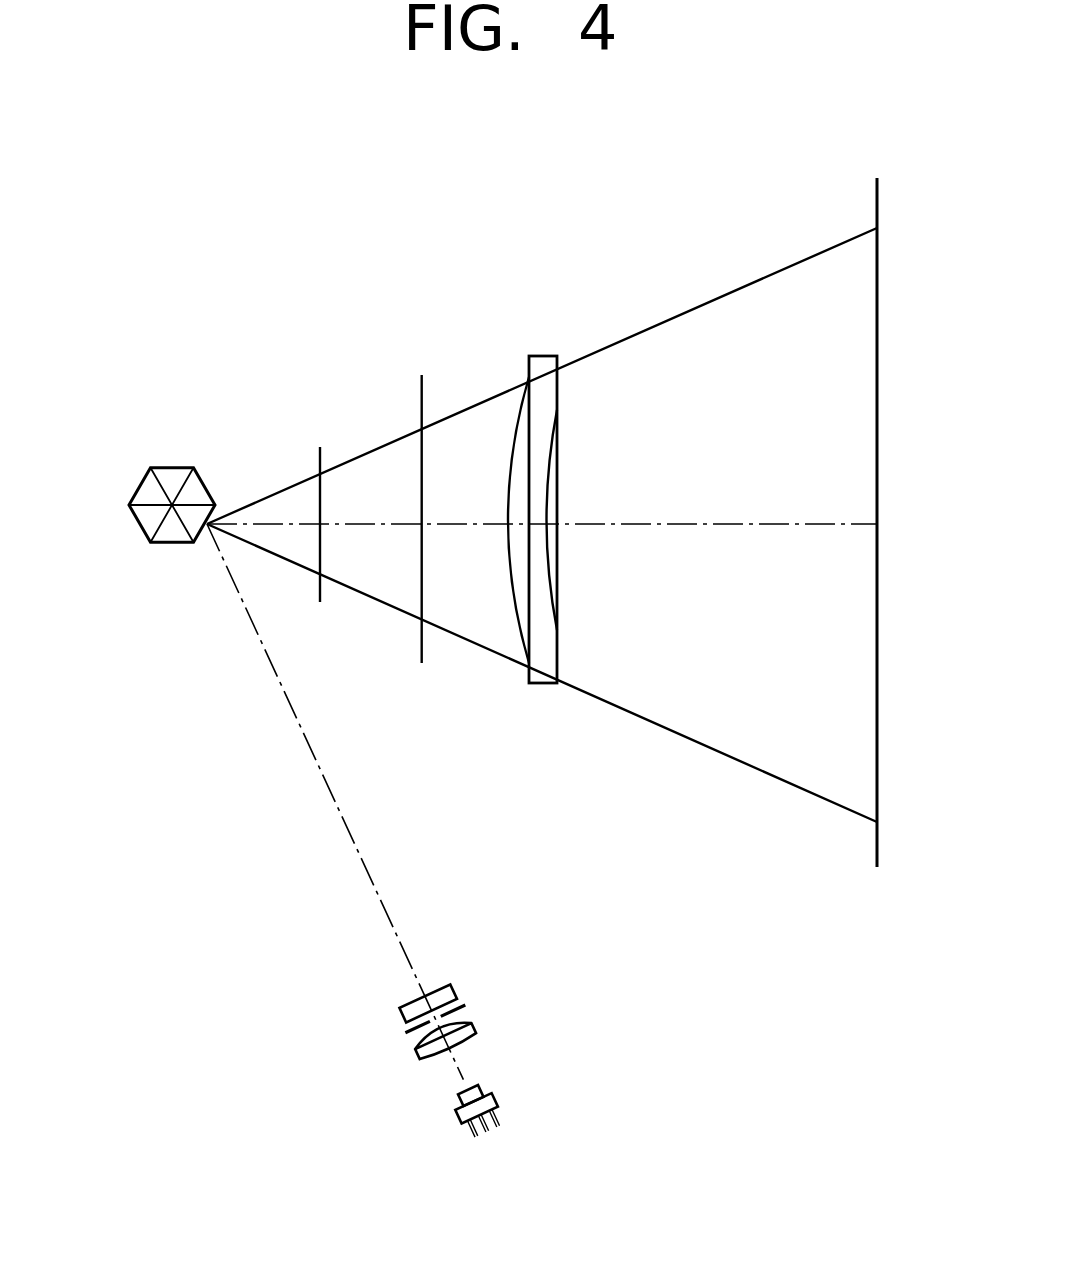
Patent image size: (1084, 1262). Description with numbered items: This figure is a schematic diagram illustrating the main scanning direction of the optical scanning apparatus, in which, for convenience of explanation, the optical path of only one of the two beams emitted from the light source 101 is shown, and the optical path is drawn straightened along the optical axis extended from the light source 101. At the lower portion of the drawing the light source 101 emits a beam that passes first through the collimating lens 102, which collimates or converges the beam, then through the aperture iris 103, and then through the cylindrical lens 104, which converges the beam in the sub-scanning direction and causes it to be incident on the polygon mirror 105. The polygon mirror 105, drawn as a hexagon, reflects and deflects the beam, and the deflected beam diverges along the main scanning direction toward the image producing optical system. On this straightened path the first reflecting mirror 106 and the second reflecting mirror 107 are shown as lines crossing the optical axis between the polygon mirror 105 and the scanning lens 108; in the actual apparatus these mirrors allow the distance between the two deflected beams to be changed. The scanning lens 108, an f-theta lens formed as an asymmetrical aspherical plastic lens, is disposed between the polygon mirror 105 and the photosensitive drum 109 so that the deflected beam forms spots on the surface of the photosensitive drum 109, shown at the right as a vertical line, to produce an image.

The light source 101 is at (461, 1122).
The collimating lens 102 is at (418, 1056).
The aperture iris 103 is at (466, 1006).
The cylindrical lens 104 is at (456, 993).
The polygon mirror 105 is at (170, 544).
The first reflecting mirror 106 is at (320, 455).
The second reflecting mirror 107 is at (422, 393).
The scanning lens 108 is at (543, 684).
The photosensitive drum 109 is at (877, 857).